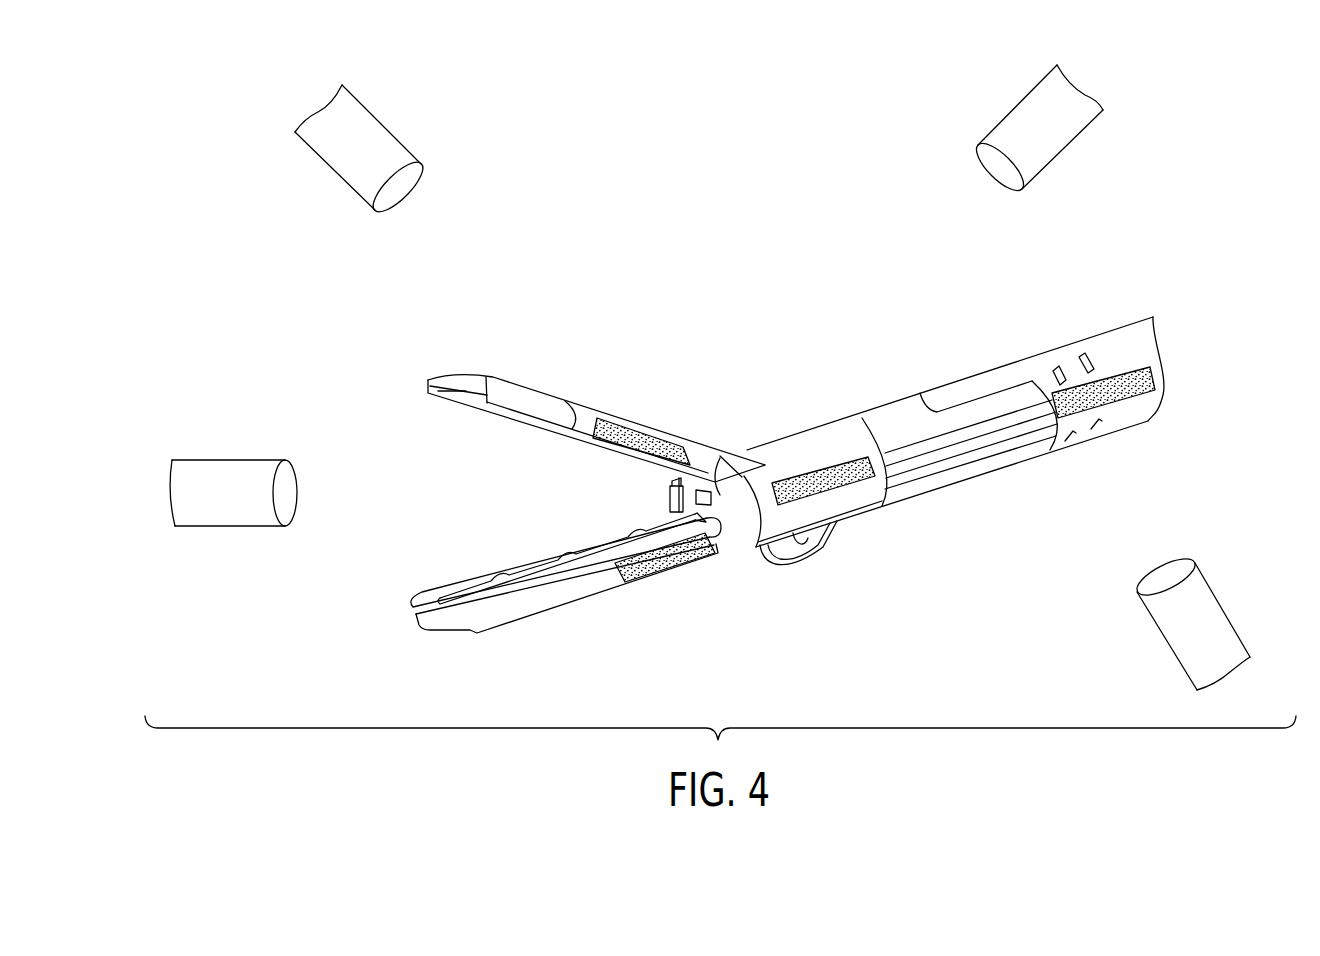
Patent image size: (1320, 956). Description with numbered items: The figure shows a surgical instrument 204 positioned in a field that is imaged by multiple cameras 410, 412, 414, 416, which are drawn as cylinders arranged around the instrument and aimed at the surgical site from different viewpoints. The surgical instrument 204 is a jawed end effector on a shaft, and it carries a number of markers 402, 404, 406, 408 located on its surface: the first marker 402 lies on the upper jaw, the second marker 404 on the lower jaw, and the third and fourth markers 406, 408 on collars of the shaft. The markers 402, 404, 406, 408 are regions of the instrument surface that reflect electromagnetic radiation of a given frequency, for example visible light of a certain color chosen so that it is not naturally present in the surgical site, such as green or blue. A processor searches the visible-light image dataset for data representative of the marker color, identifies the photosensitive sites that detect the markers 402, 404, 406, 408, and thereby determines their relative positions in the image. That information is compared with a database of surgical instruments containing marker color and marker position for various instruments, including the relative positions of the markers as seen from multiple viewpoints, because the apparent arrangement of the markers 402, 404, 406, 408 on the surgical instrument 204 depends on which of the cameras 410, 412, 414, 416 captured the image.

The surgical instrument 204 is at (744, 338).
The marker 402 is at (663, 447).
The marker 404 is at (673, 560).
The marker 406 is at (815, 482).
The marker 408 is at (1112, 386).
The camera 410 is at (375, 137).
The camera 412 is at (228, 475).
The camera 414 is at (1056, 143).
The camera 416 is at (1213, 608).